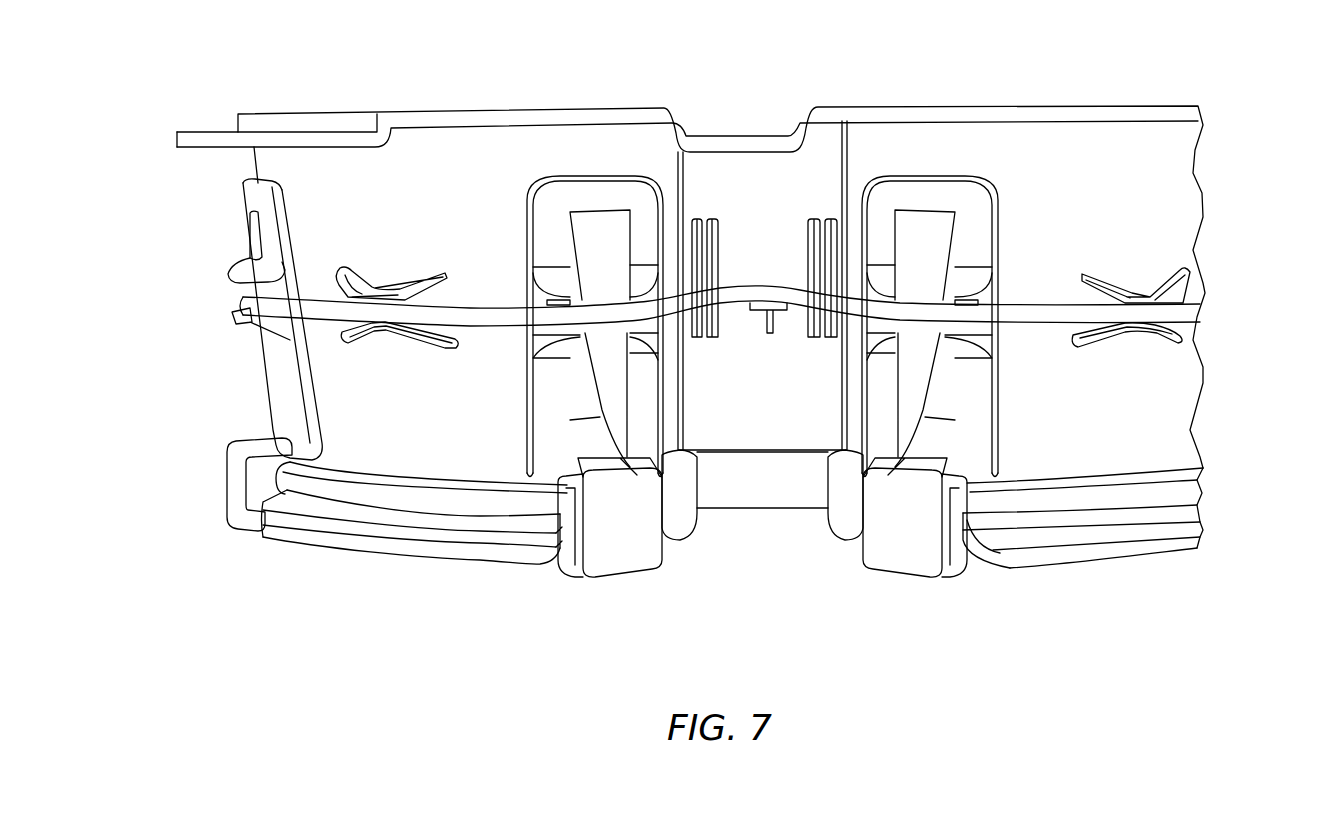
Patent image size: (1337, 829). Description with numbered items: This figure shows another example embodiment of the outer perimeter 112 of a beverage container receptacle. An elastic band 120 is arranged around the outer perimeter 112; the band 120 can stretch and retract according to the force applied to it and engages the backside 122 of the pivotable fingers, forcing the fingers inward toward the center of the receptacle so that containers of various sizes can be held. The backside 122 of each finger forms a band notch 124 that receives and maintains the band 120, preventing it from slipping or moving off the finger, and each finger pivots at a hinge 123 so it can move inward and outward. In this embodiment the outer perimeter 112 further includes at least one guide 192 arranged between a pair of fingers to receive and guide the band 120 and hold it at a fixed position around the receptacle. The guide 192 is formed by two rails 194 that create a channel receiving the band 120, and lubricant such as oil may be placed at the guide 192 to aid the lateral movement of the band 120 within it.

The outer perimeter 112 is at (445, 433).
The band 120 is at (472, 313).
The backside 122 is at (585, 387).
The hinge 123 is at (618, 552).
The band notch 124 is at (578, 337).
The guide 192 is at (349, 259).
The rails 194 is at (396, 288).